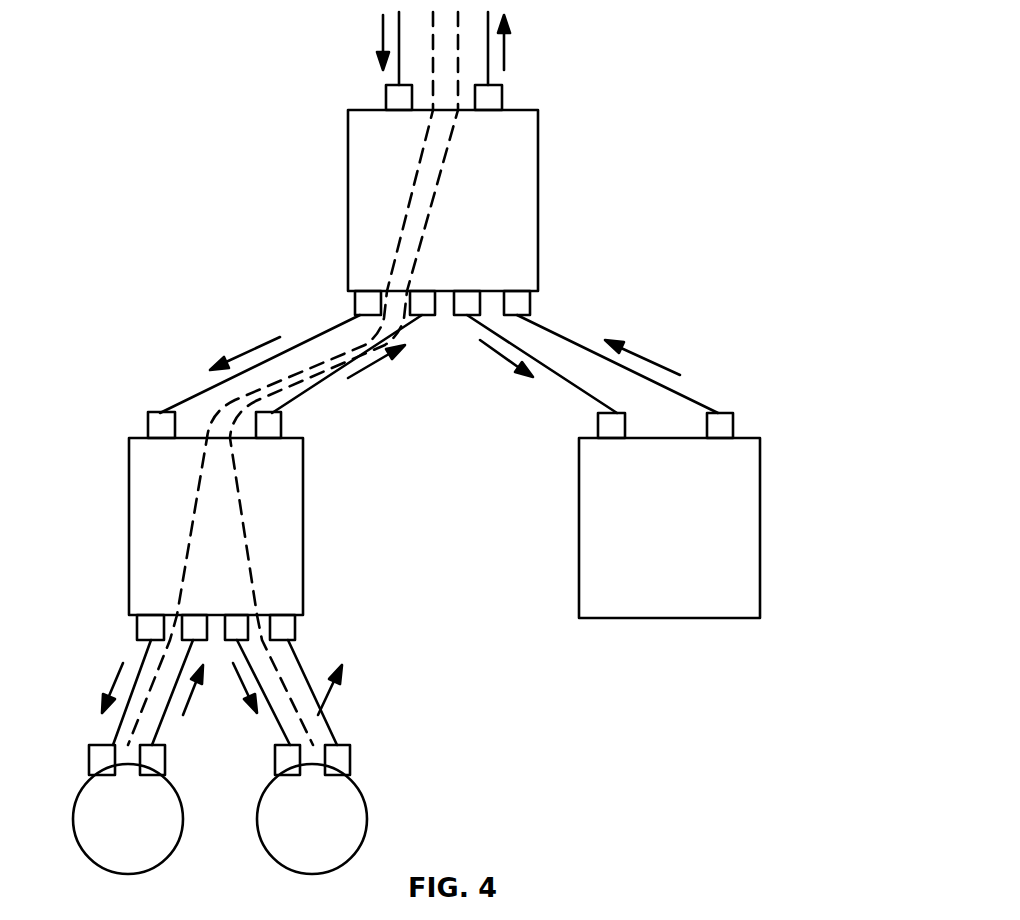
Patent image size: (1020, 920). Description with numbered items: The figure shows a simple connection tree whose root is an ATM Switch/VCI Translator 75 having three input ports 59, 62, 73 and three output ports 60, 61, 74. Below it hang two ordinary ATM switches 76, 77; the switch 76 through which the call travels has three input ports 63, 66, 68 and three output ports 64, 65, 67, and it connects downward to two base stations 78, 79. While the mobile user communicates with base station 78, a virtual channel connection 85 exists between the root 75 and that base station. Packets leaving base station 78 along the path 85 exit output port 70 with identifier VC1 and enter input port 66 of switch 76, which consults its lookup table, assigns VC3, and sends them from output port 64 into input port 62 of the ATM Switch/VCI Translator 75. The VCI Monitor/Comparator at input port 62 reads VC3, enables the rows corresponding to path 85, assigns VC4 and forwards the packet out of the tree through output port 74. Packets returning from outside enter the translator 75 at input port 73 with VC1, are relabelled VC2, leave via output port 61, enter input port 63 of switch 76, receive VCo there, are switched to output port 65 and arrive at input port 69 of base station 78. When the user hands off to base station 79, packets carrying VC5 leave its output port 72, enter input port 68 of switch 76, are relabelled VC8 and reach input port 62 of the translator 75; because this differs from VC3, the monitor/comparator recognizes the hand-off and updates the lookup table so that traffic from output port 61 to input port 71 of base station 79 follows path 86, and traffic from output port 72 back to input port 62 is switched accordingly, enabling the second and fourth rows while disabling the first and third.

The input port 59 is at (525, 303).
The output port 60 is at (460, 315).
The output port 61 is at (360, 303).
The input port 62 is at (427, 317).
The input port 63 is at (157, 422).
The output port 64 is at (270, 425).
The output port 65 is at (143, 632).
The input port 66 is at (197, 642).
The output port 67 is at (237, 625).
The input port 68 is at (287, 630).
The input port 69 is at (89, 757).
The output port 70 is at (155, 754).
The input port 71 is at (283, 758).
The output port 72 is at (342, 763).
The input port 73 is at (390, 92).
The output port 74 is at (495, 95).
The ATM Switch/VCI Translator 75 is at (527, 205).
The ATM switch 76 is at (137, 563).
The ATM switch 77 is at (750, 528).
The base station 78 is at (85, 820).
The base station 79 is at (355, 822).
The virtual channel connection 85 is at (192, 515).
The path 86 is at (238, 502).